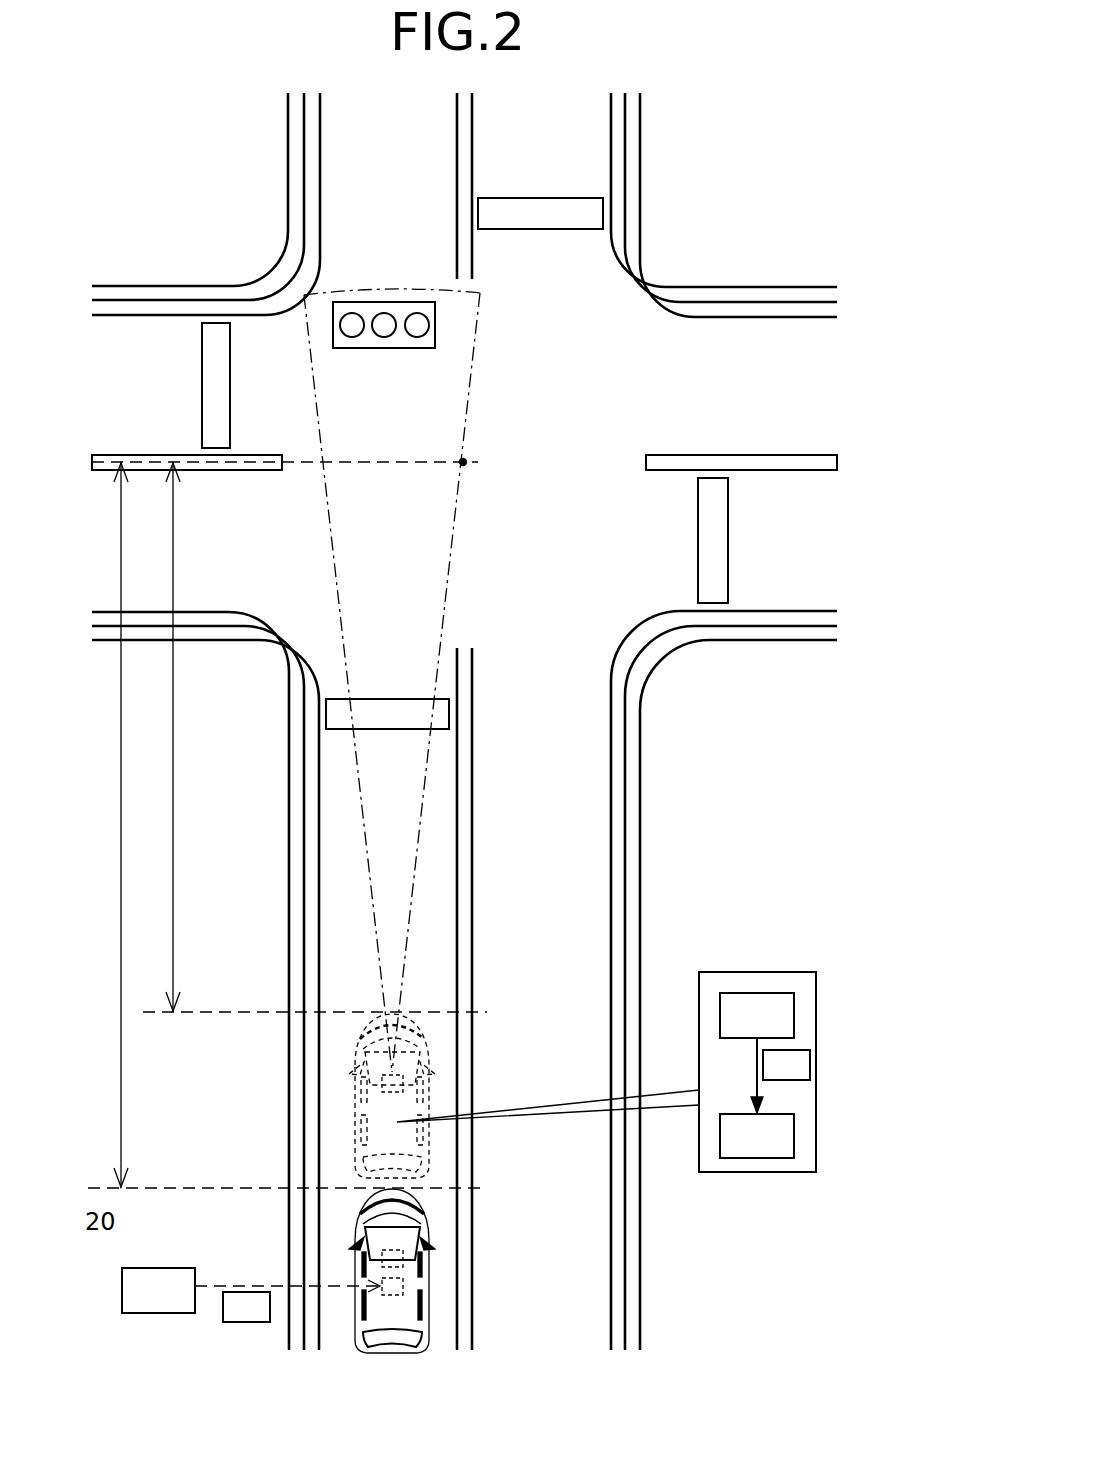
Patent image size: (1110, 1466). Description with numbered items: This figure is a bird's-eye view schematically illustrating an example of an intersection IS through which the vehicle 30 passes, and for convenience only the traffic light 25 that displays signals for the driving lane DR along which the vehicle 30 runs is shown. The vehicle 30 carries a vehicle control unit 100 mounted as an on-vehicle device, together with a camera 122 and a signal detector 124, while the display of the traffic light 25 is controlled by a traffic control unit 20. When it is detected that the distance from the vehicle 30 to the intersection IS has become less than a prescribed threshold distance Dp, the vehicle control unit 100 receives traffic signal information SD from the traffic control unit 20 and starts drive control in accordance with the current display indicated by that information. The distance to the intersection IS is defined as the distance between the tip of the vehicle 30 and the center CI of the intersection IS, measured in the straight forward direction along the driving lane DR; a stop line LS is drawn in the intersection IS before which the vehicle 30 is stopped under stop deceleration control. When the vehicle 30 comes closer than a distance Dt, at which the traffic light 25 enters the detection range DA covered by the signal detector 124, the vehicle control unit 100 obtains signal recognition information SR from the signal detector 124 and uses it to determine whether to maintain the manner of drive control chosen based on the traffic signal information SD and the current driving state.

The traffic control unit 20 is at (251, 1290).
The traffic light 25 is at (370, 302).
The vehicle 30 is at (383, 1123).
The vehicle control unit 100 is at (405, 1281).
The camera 122 is at (383, 1077).
The signal detector 124 is at (757, 1053).
The intersection IS is at (254, 230).
The center of the intersection CI is at (466, 460).
The detection range DA is at (445, 628).
The stop line LS is at (330, 715).
The driving lane DR is at (338, 913).
The prescribed threshold distance Dp is at (106, 825).
The distance Dt is at (161, 737).
The traffic signal information SD is at (246, 1307).
The signal recognition information SR is at (786, 1065).